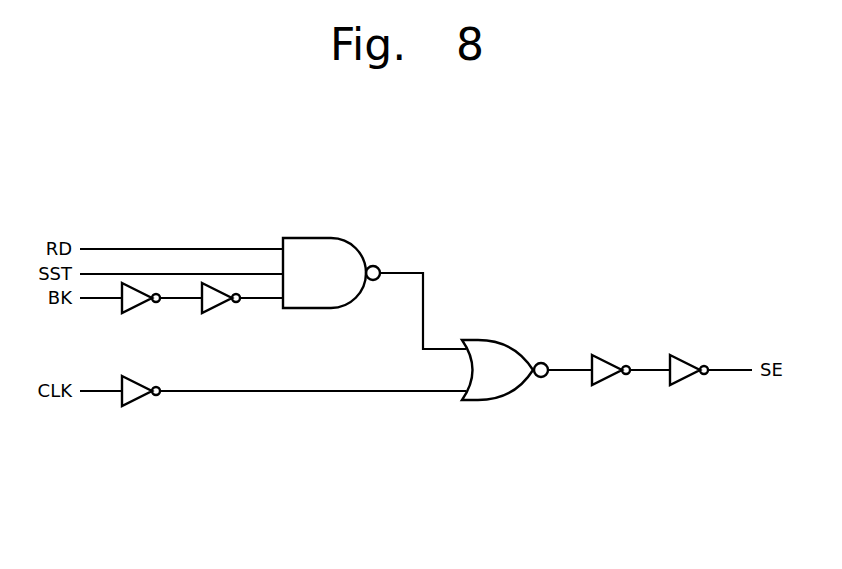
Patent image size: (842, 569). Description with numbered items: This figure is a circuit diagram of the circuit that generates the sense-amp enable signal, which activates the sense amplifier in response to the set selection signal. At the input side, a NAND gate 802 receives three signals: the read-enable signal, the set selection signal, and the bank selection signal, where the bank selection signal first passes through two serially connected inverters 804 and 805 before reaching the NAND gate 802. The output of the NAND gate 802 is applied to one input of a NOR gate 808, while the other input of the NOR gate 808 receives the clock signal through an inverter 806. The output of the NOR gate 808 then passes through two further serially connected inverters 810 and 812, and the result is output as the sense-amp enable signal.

The NAND gate 802 is at (308, 237).
The inverter 804 is at (141, 313).
The inverter 805 is at (221, 313).
The inverter 806 is at (141, 406).
The NOR gate 808 is at (495, 339).
The inverter 810 is at (607, 355).
The inverter 812 is at (685, 355).